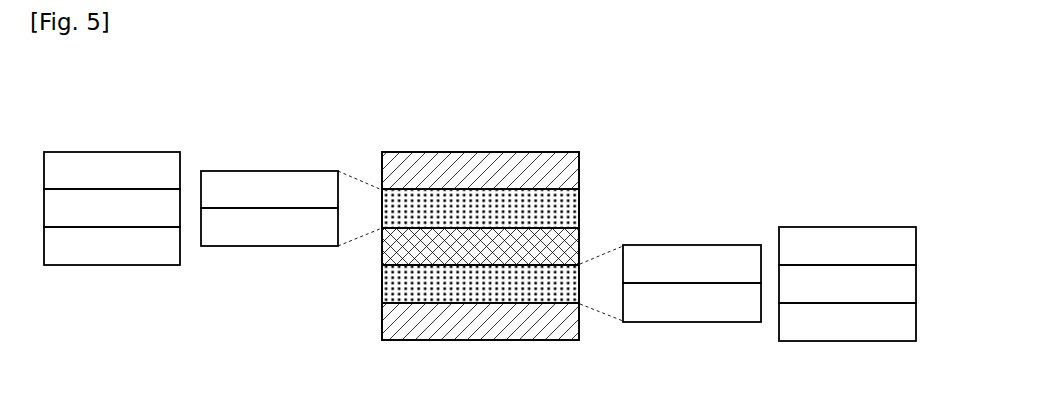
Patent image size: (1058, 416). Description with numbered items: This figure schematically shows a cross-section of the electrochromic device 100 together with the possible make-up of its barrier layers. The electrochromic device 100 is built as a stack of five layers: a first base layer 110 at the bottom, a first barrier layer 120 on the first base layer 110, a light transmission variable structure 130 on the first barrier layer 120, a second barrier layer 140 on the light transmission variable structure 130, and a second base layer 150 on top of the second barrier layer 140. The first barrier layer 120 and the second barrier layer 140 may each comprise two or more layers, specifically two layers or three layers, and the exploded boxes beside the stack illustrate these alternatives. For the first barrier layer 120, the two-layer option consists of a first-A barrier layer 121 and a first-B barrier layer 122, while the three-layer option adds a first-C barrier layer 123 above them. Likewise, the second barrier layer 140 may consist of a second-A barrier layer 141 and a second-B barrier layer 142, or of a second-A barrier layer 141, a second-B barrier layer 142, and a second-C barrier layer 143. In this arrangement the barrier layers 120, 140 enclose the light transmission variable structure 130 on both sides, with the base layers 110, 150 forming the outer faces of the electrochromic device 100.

The electrochromic device 100 is at (543, 104).
The first base layer 110 is at (480, 321).
The first barrier layer 120 is at (480, 284).
The first-A barrier layer 121 is at (769, 312).
The first-B barrier layer 122 is at (769, 274).
The first-C barrier layer 123 is at (847, 246).
The light transmission variable structure 130 is at (480, 246).
The second barrier layer 140 is at (480, 208).
The second-A barrier layer 141 is at (191, 180).
The second-B barrier layer 142 is at (191, 217).
The second-C barrier layer 143 is at (112, 246).
The second base layer 150 is at (480, 170).